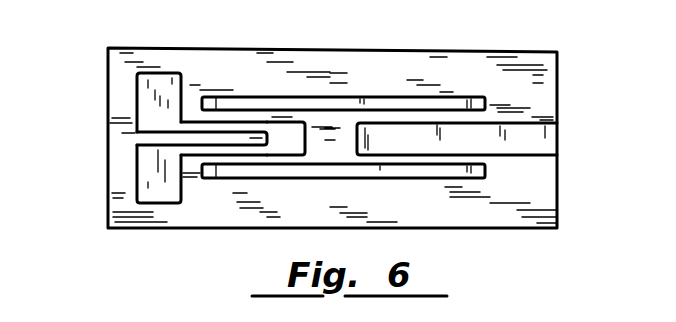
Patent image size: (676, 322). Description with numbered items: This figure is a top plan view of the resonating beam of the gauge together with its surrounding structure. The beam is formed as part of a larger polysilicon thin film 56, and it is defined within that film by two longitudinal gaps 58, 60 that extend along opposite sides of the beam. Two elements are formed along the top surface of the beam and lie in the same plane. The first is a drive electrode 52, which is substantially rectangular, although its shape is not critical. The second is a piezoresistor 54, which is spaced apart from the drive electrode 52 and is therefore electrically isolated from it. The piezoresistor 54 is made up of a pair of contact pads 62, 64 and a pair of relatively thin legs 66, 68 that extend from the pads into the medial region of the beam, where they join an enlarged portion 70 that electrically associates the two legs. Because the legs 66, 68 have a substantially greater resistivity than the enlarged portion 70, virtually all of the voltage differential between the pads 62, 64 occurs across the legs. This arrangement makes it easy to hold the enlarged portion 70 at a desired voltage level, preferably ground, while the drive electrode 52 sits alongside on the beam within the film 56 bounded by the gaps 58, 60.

The drive electrode 52 is at (530, 145).
The piezoresistor 54 is at (250, 137).
The polysilicon thin film 56 is at (457, 73).
The longitudinal gap 58 is at (352, 97).
The longitudinal gap 60 is at (348, 178).
The contact pad 62 is at (150, 103).
The contact pad 64 is at (150, 169).
The leg 66 is at (218, 128).
The leg 68 is at (224, 160).
The enlarged portion 70 is at (288, 136).